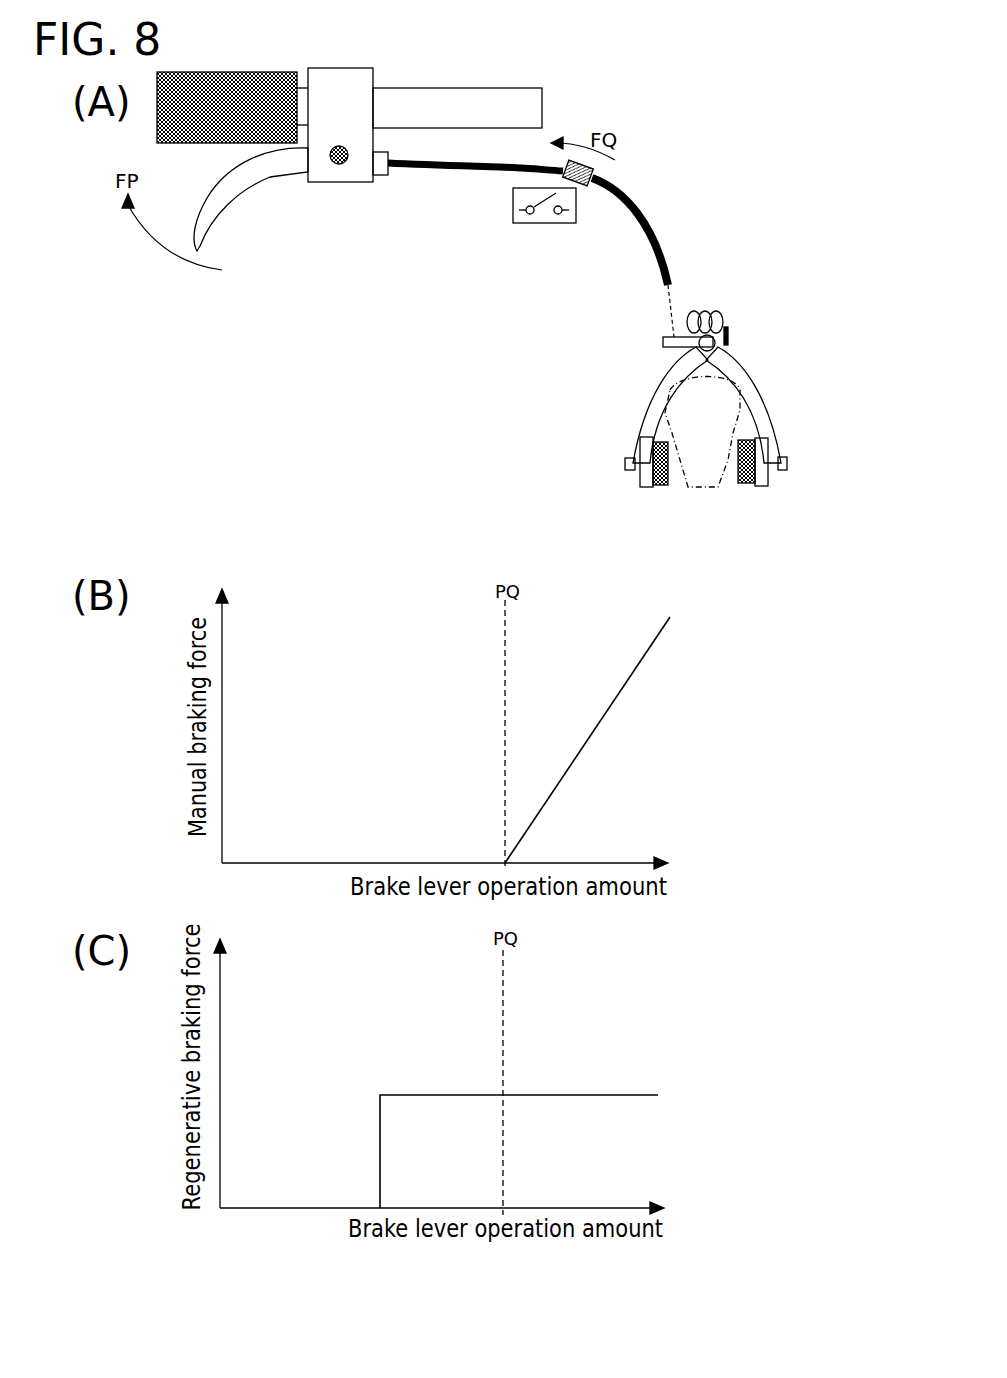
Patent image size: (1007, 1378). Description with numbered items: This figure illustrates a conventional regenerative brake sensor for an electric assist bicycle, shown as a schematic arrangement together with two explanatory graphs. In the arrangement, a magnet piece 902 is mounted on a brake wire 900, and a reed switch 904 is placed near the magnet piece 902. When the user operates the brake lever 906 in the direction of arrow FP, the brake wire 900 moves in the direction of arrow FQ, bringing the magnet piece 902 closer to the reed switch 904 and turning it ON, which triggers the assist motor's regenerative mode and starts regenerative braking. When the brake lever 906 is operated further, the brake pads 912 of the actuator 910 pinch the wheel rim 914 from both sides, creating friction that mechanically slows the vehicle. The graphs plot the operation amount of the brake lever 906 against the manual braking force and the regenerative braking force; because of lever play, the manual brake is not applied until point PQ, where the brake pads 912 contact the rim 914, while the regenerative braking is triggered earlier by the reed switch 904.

The brake wire 900 is at (637, 212).
The magnet piece 902 is at (598, 172).
The reed switch 904 is at (523, 225).
The brake lever 906 is at (248, 192).
The actuator 910 is at (765, 338).
The brake pads 912 is at (667, 487).
The wheel rim 914 is at (680, 487).